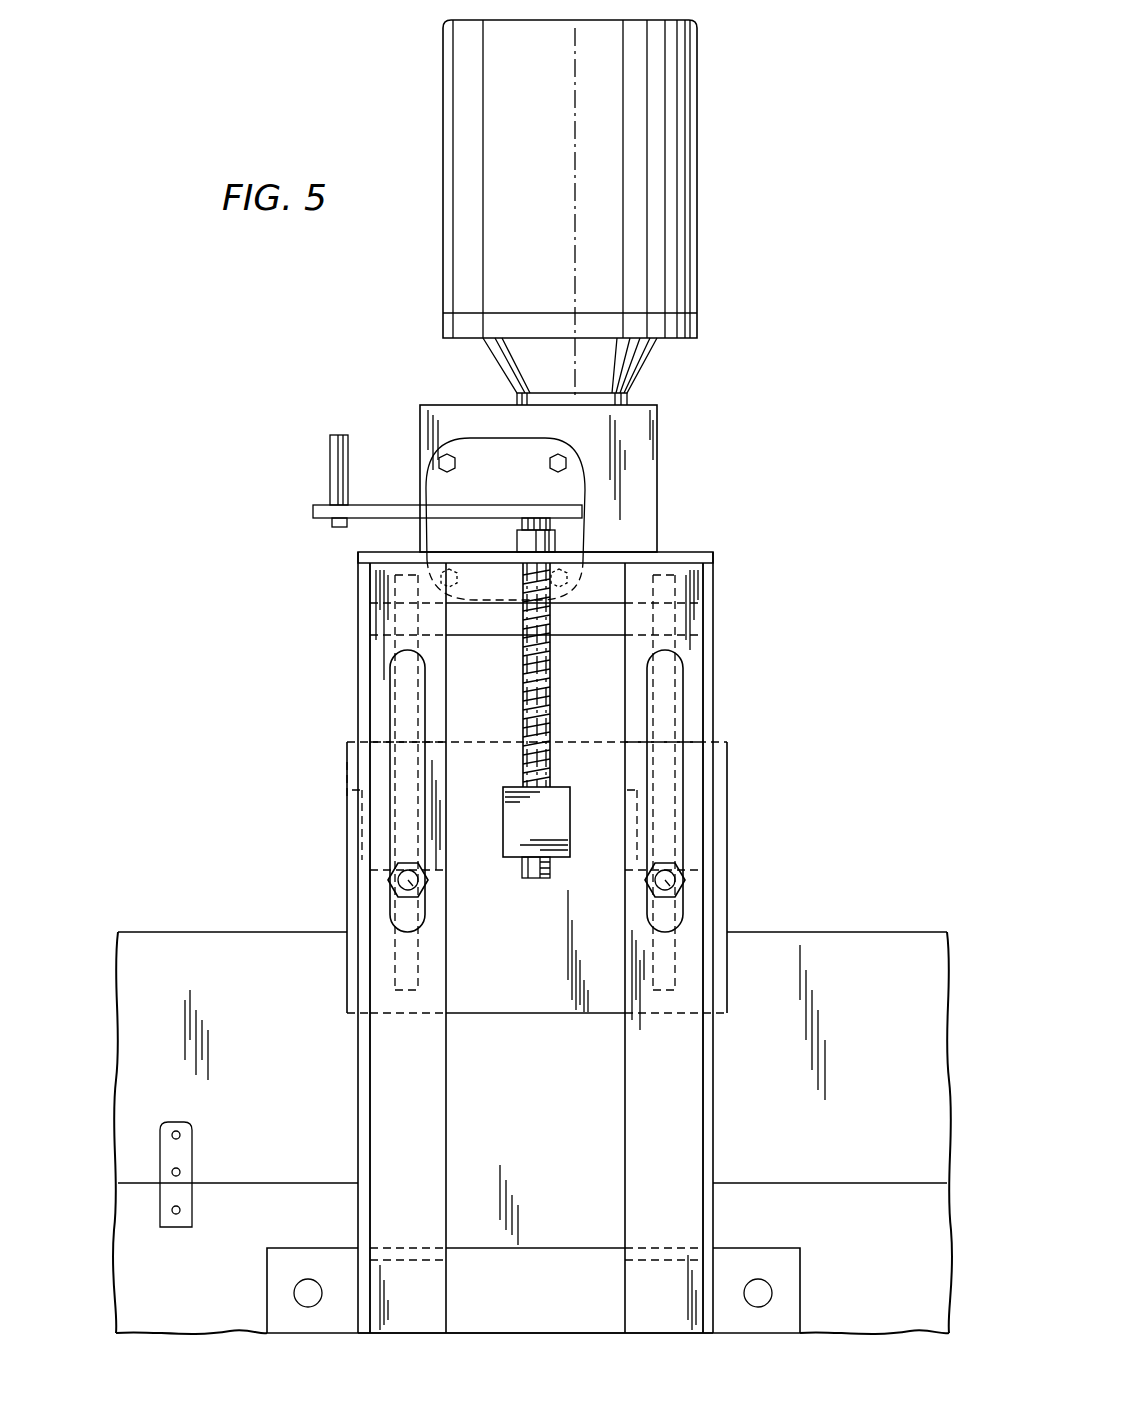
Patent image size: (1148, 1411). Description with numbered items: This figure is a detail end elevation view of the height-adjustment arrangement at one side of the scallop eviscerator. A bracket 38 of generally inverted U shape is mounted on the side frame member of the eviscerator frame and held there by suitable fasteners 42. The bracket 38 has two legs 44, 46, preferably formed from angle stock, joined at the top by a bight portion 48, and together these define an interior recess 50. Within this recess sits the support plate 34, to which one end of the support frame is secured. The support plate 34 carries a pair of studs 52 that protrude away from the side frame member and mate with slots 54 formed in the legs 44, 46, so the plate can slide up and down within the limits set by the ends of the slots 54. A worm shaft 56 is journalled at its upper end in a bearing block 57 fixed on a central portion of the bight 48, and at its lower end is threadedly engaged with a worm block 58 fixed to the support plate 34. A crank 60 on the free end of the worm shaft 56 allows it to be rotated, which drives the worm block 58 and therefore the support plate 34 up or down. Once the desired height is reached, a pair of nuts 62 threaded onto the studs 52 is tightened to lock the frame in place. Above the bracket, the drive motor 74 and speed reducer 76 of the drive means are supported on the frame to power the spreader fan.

The support plate 34 is at (515, 998).
The bracket 38 is at (720, 608).
The fasteners 42 is at (754, 1285).
The leg 44 is at (378, 1118).
The leg 46 is at (690, 1137).
The bight portion 48 is at (606, 552).
The interior recess 50 is at (625, 1076).
The studs 52 is at (398, 880).
The slots 54 is at (390, 700).
The worm shaft 56 is at (550, 700).
The bearing block 57 is at (517, 540).
The worm block 58 is at (503, 842).
The crank 60 is at (325, 518).
The nuts 62 is at (428, 895).
The drive motor 74 is at (686, 237).
The speed reducer 76 is at (650, 462).